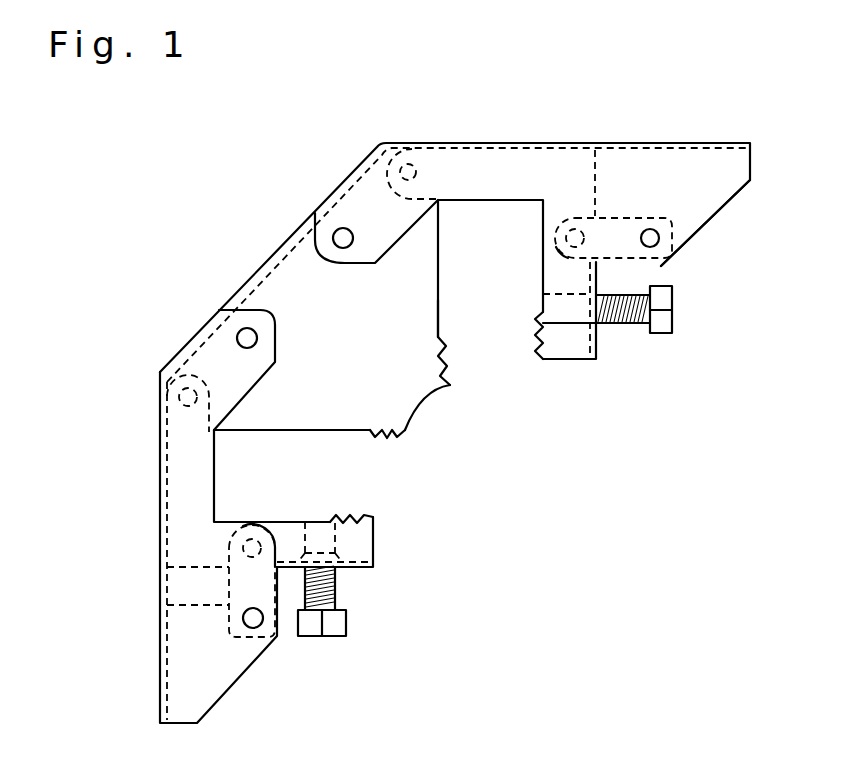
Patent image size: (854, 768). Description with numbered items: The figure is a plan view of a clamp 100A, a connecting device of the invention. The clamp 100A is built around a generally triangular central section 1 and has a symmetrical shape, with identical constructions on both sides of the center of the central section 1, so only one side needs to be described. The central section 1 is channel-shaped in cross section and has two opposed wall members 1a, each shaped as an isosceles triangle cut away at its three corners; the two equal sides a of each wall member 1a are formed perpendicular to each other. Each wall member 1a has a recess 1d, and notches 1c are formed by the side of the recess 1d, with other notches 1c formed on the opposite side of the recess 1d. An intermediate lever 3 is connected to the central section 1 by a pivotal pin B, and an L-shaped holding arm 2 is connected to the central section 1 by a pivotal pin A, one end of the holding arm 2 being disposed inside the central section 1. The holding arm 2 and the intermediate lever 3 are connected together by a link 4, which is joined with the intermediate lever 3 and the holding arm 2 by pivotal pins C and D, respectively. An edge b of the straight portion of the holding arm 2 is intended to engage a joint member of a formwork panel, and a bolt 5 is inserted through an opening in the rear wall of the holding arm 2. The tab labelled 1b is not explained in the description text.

The clamp 100A is at (255, 197).
The central section 1 is at (272, 253).
The wall member 1a is at (417, 302).
The mounting lug of corner fitting 1b is at (265, 277).
The notch 1c is at (450, 378).
The recess 1d is at (422, 405).
The L-shaped holding arm 2 is at (570, 357).
The intermediate lever 3 is at (682, 162).
The link 4 is at (622, 216).
The bolt 5 is at (672, 322).
The pivotal pin A is at (407, 160).
The pivotal pin B is at (338, 228).
The pivotal pin C is at (660, 238).
The pivotal pin D is at (565, 240).
The equal side a is at (445, 328).
The edge b is at (542, 292).